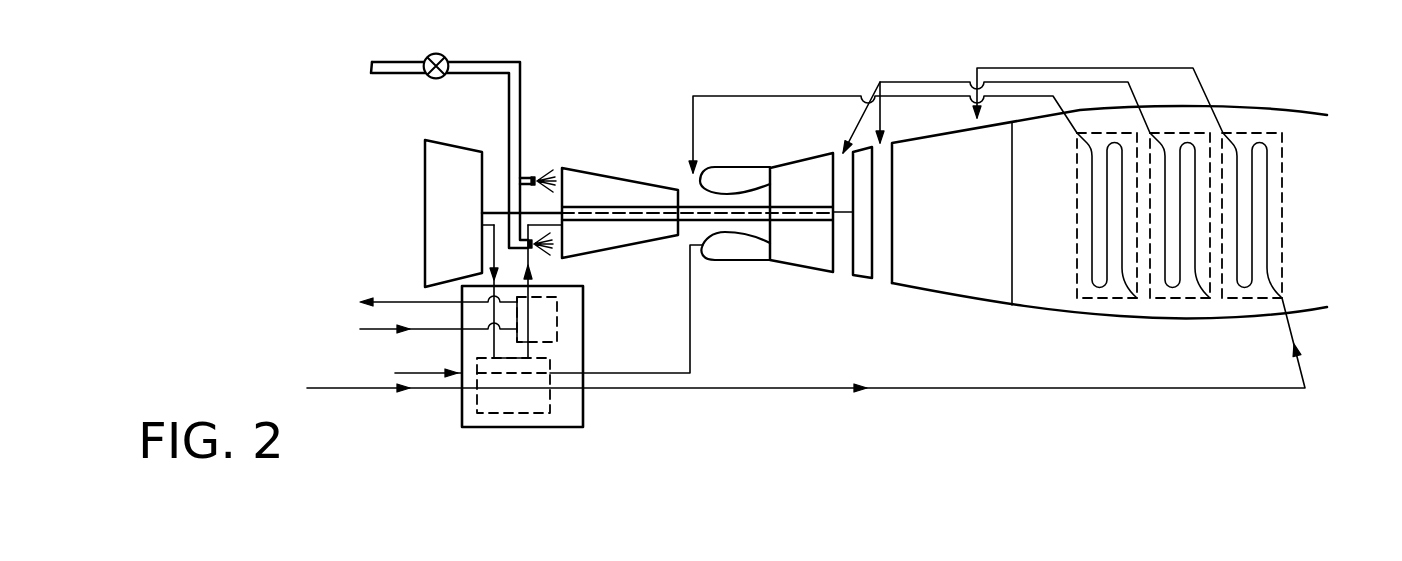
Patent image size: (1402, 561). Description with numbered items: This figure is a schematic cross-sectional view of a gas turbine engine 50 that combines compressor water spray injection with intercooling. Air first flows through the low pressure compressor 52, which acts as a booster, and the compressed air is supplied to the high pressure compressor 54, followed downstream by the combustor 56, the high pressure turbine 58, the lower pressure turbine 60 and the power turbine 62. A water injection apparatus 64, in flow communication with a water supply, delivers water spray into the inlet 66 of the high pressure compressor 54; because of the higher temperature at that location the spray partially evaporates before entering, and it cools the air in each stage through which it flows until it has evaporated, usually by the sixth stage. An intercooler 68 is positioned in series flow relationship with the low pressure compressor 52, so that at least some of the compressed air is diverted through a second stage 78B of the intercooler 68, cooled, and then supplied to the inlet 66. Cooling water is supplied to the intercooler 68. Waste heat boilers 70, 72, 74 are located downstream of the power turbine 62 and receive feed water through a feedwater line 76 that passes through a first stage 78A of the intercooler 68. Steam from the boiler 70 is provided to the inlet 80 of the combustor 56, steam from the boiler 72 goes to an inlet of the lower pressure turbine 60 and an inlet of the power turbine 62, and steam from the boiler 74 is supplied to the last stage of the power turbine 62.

The gas turbine engine 50 is at (1300, 100).
The low pressure compressor 52 is at (475, 150).
The high pressure compressor 54 is at (658, 250).
The combustor 56 is at (705, 262).
The high pressure turbine 58 is at (790, 267).
The lower pressure turbine 60 is at (860, 277).
The power turbine 62 is at (943, 295).
The water injection apparatus 64 is at (520, 103).
The inlet 66 is at (557, 172).
The intercooler 68 is at (583, 413).
The waste heat boiler 70 is at (1077, 200).
The waste heat boiler 72 is at (1177, 300).
The waste heat boiler 74 is at (1282, 203).
The feedwater line 76 is at (812, 387).
The first stage 78A is at (525, 413).
The second stage 78B is at (557, 342).
The inlet 80 is at (682, 192).